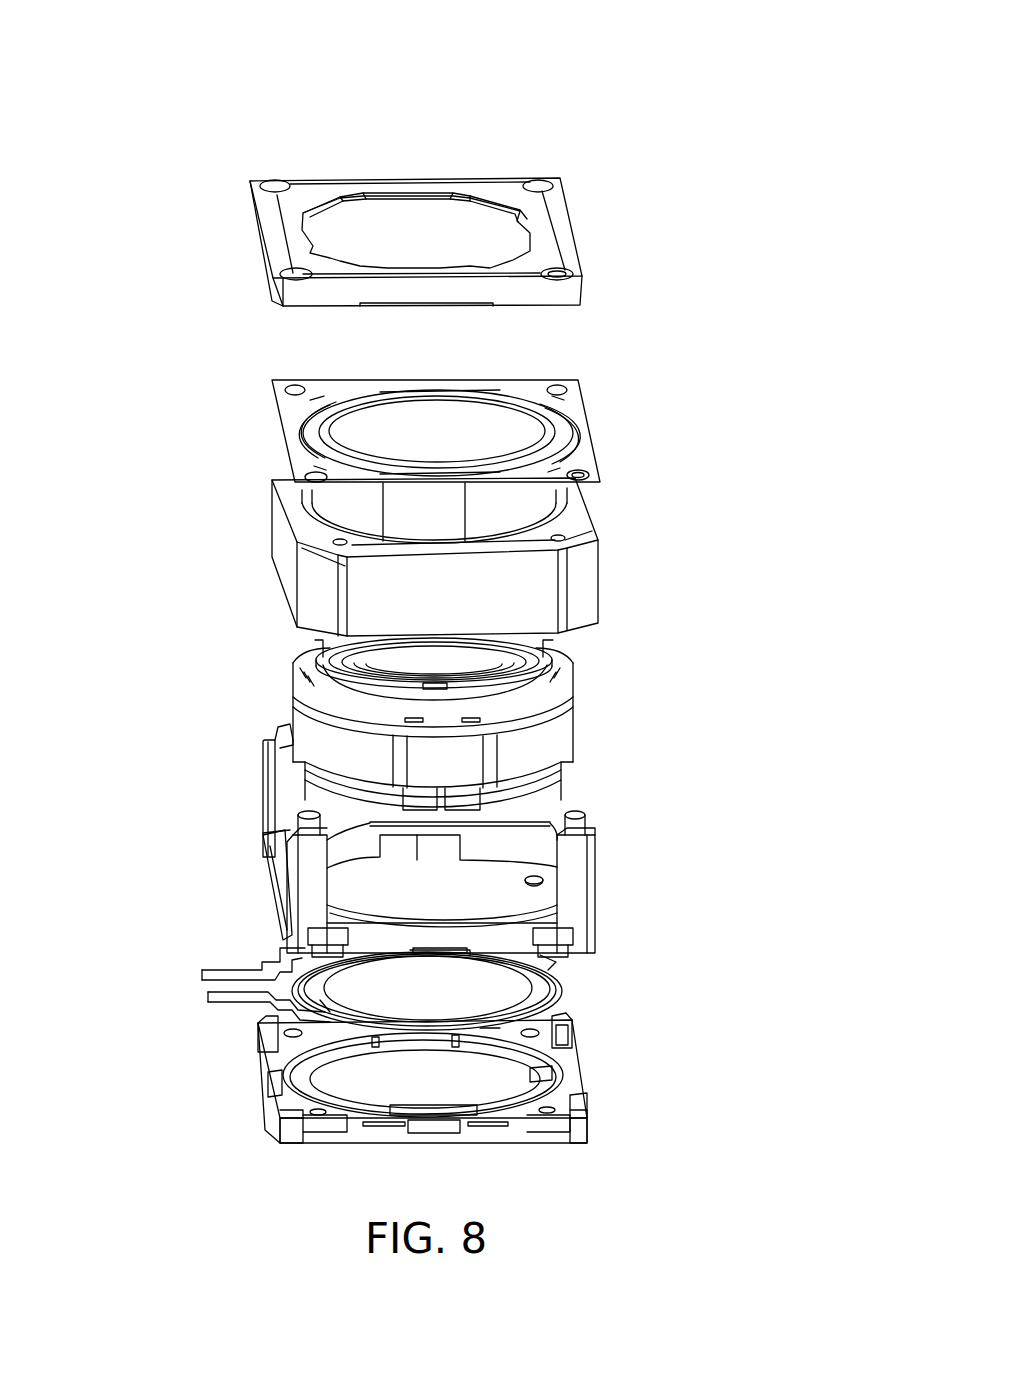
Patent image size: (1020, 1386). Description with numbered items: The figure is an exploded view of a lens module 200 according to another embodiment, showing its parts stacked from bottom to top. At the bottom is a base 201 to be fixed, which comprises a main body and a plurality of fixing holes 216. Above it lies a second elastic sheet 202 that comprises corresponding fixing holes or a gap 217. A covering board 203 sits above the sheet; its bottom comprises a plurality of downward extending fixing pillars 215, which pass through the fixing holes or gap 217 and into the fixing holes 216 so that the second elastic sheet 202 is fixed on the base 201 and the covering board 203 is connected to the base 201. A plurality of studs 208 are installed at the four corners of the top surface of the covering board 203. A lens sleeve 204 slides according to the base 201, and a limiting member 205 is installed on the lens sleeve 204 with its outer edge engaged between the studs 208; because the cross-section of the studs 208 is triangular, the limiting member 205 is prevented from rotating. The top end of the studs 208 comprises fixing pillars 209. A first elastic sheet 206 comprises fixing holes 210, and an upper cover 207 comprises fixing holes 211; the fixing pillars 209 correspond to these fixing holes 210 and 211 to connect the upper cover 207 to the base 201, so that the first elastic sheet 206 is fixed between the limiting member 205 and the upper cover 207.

The lens module 200 is at (418, 117).
The base 201 is at (380, 1137).
The second elastic sheet 202 is at (560, 982).
The covering board 203 is at (273, 890).
The lens sleeve 204 is at (287, 693).
The limiting member 205 is at (270, 558).
The first elastic sheet 206 is at (277, 410).
The upper cover 207 is at (257, 238).
The studs 208 is at (568, 873).
The fixing pillars 209 is at (580, 826).
The fixing holes 210 is at (597, 467).
The fixing holes 211 is at (573, 268).
The fixing pillars 215 is at (563, 953).
The fixing holes 216 is at (560, 1117).
The fixing holes or gap 217 is at (563, 1030).